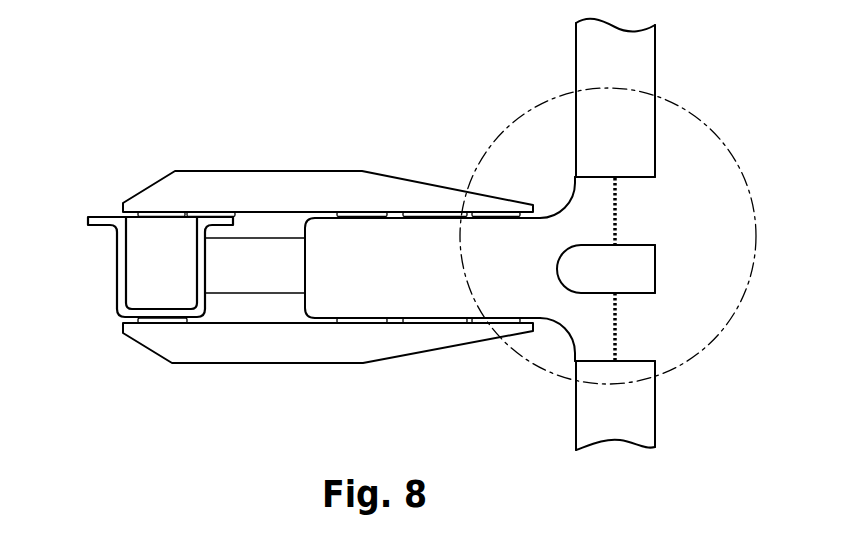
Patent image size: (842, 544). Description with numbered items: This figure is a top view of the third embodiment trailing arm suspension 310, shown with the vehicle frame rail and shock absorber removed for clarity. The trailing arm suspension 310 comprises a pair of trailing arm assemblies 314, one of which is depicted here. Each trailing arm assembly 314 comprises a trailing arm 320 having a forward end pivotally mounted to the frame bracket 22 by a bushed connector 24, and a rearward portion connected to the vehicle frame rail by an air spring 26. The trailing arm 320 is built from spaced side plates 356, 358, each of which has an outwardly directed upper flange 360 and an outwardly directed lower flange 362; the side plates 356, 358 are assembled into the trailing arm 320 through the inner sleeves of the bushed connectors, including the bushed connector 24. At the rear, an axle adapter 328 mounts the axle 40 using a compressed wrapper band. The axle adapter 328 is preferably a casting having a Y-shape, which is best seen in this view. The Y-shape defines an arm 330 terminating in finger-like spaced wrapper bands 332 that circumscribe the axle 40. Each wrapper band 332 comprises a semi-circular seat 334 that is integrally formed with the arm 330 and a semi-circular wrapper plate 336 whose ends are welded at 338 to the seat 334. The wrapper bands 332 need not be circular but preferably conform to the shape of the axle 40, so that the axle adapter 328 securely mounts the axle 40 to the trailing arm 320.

The frame bracket 22 is at (115, 240).
The bushed connector 24 is at (136, 321).
The air spring 26 is at (693, 110).
The axle 40 is at (587, 427).
The trailing arm suspension 310 is at (233, 104).
The trailing arm assembly 314 is at (160, 154).
The trailing arm 320 is at (391, 160).
The axle adapter 328 is at (461, 321).
The arm 330 is at (373, 268).
The wrapper band 332 is at (614, 182).
The semi-circular seat 334 is at (562, 196).
The semi-circular wrapper plate 336 is at (645, 193).
The weld 338 is at (620, 222).
The side plate 356 is at (222, 376).
The side plate 358 is at (290, 158).
The upper flange 360 is at (330, 188).
The lower flange 362 is at (263, 238).